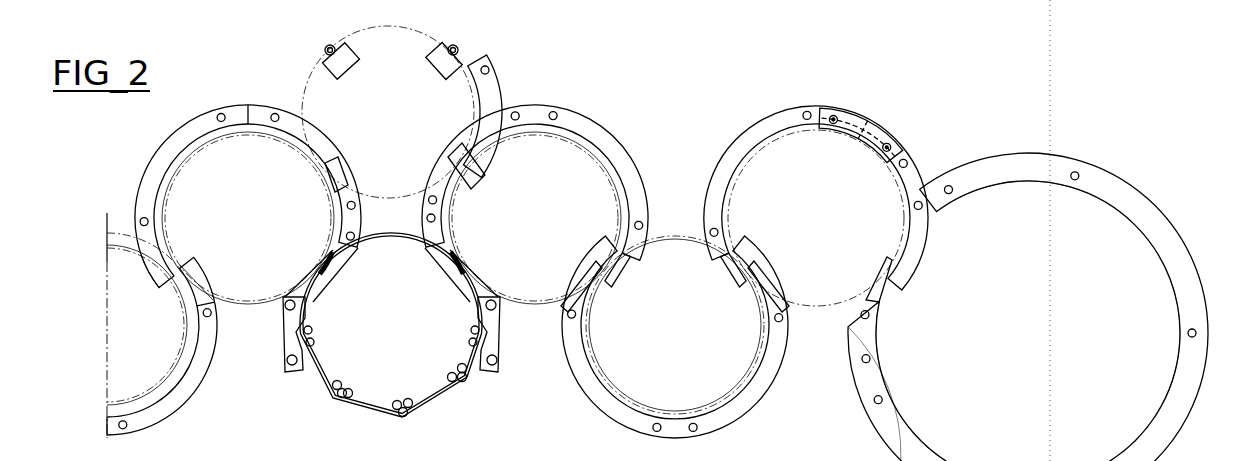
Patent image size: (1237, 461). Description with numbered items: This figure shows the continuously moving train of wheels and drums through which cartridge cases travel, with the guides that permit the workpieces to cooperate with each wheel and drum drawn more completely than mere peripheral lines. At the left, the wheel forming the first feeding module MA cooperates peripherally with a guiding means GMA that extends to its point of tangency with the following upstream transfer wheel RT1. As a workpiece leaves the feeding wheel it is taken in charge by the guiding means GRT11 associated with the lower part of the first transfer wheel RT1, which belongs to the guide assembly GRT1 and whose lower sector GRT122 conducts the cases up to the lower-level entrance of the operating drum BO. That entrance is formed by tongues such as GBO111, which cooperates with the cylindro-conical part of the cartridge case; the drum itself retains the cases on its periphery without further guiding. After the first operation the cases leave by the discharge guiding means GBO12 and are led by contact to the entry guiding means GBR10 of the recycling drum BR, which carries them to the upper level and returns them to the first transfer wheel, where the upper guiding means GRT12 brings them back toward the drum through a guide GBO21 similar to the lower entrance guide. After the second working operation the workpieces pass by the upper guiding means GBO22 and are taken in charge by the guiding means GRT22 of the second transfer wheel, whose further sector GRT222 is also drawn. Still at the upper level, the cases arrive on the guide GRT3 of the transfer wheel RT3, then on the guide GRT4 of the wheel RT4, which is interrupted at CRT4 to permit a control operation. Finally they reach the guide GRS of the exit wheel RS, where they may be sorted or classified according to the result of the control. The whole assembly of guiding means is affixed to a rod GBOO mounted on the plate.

The guiding means GRT11 is at (155, 172).
The guiding means GRT12 is at (330, 193).
The ring 1 flange GRT1 is at (196, 359).
The lower sector of ring 1 flange GRT122 is at (320, 354).
The first transfer wheel RT1 is at (250, 312).
The guiding means GRT22 is at (595, 138).
The lower sector of ring 2 flange GRT222 is at (484, 354).
The recycling drum BR is at (415, 47).
The entry guiding means GBR10 is at (488, 87).
The guide GRT3 is at (608, 405).
The transfer wheel RT3 is at (732, 373).
The ring 4 flange GRT4 is at (778, 127).
The interruption for control operation CRT4 is at (880, 125).
The wheel RT4 is at (758, 177).
The guide GRS is at (1118, 190).
The discharge wheel RS is at (1137, 278).
The rod GBOO is at (851, 394).
The first feeding module MA is at (123, 350).
The guiding means GMA is at (178, 392).
The operating drum BO is at (427, 398).
The tongue GBO111 is at (300, 352).
The frame bracket balls GBO21 is at (333, 378).
The discharge guiding means GBO12 is at (497, 348).
The upper guiding means GBO22 is at (501, 373).